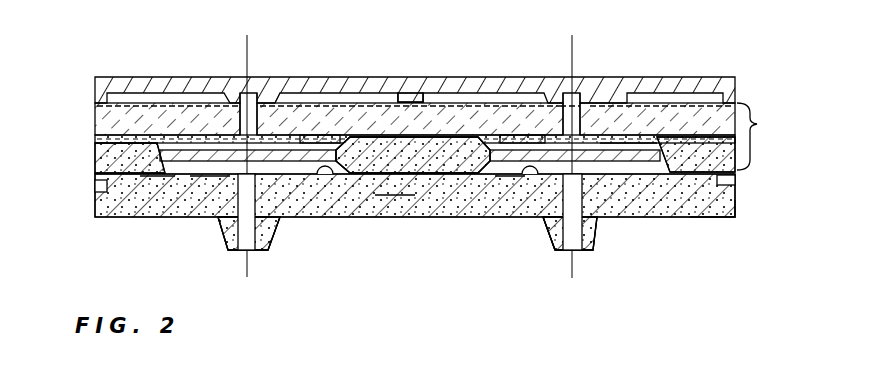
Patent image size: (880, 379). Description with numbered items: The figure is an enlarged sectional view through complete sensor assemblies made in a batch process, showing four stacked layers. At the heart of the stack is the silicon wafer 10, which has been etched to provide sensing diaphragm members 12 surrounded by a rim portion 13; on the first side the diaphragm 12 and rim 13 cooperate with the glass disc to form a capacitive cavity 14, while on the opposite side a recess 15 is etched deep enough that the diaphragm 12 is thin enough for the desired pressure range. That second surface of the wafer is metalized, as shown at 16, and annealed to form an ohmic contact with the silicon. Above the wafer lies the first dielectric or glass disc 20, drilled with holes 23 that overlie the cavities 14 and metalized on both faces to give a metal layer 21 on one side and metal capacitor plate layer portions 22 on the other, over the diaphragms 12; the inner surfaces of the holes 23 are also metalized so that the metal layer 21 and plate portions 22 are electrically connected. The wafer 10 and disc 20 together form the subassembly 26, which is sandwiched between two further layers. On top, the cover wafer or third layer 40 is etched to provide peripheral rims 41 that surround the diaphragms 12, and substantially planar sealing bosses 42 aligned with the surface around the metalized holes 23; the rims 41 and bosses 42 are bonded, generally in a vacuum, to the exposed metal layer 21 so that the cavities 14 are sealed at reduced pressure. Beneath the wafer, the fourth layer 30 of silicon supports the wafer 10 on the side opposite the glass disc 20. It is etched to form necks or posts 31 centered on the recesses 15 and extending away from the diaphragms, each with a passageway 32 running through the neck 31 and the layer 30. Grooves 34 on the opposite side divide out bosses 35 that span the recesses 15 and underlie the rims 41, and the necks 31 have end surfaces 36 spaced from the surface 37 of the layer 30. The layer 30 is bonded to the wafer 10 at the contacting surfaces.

The silicon wafer 10 is at (747, 148).
The sensing diaphragm member 12 is at (213, 182).
The rim portion 13 is at (435, 150).
The cavity 14 is at (312, 140).
The recess 15 is at (155, 178).
The metal layer 16 is at (391, 185).
The dielectric disc 20 is at (100, 125).
The metal layer 21 is at (388, 103).
The metal capacitor plate layer portion 22 is at (100, 147).
The hole 23 is at (228, 78).
The subassembly 26 is at (765, 136).
The fourth layer 30 is at (722, 207).
The neck 31 is at (552, 233).
The passageway 32 is at (252, 250).
The groove 34 is at (105, 182).
The boss 35 is at (326, 180).
The end surface 36 is at (227, 237).
The surface 37 is at (700, 217).
The cover wafer 40 is at (735, 80).
The peripheral rim 41 is at (441, 102).
The sealing boss 42 is at (296, 93).